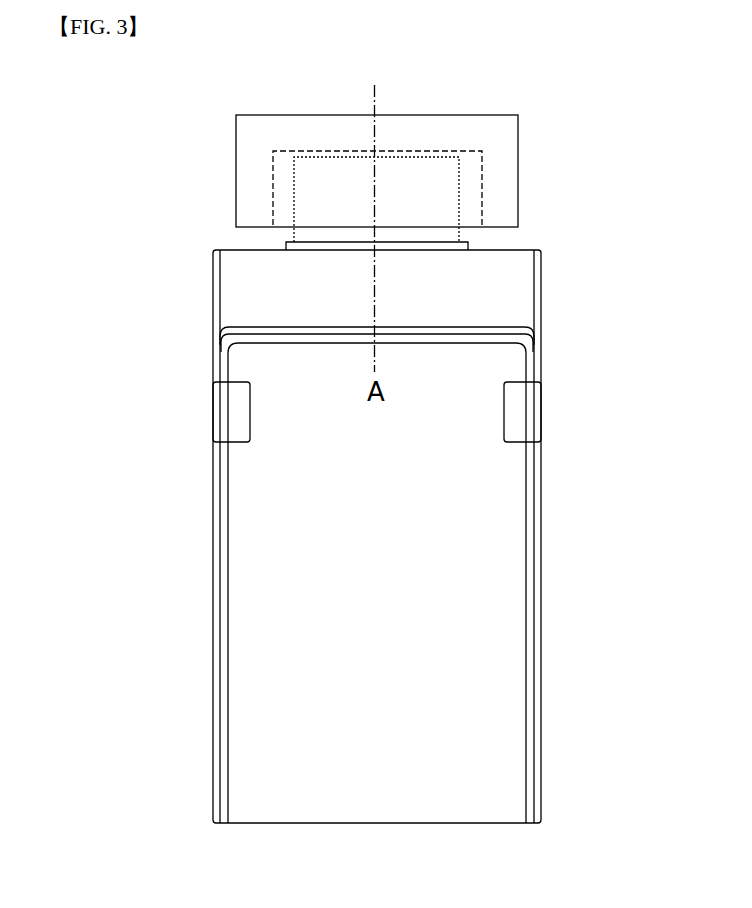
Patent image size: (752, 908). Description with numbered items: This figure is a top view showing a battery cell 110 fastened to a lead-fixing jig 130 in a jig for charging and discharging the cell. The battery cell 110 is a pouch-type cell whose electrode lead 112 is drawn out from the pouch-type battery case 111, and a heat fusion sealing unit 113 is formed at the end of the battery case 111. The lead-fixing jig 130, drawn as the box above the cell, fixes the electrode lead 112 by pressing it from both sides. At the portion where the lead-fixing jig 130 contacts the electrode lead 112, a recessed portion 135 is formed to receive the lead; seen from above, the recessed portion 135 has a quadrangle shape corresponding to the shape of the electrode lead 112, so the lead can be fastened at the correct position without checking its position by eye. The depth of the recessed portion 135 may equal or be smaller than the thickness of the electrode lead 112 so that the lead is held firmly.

The battery cell 110 is at (469, 513).
The battery case 111 is at (429, 575).
The electrode lead 112 is at (460, 213).
The heat fusion sealing unit 113 is at (500, 282).
The lead-fixing jig 130 is at (518, 163).
The recessed portion 135 is at (284, 183).